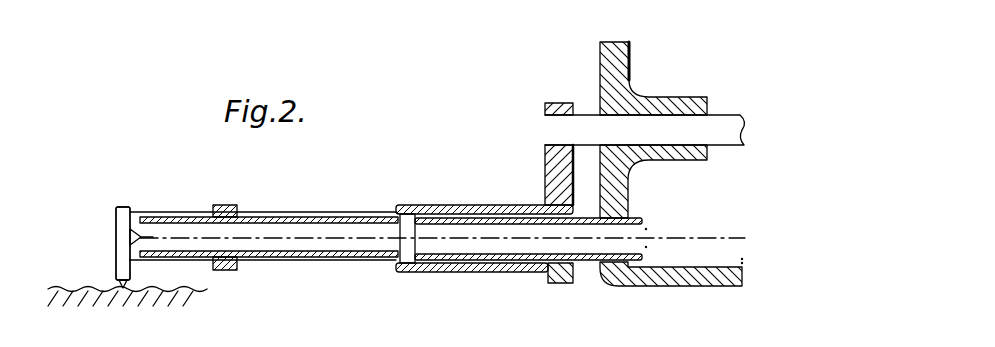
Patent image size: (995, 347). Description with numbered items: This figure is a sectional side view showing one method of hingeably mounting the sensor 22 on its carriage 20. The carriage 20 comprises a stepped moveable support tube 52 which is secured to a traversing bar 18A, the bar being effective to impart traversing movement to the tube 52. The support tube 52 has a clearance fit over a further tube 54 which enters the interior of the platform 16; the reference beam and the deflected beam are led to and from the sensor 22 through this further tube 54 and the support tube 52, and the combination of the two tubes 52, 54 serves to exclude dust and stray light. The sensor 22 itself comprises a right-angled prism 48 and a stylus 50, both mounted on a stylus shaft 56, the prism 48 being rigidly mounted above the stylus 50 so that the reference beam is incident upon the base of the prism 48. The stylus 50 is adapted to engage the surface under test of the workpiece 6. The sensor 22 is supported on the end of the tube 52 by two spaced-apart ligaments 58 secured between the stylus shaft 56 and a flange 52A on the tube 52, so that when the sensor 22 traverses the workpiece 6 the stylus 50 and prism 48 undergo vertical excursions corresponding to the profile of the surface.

The workpiece 6 is at (192, 289).
The platform 16 is at (605, 70).
The shaft 18A is at (560, 131).
The carriage 20 is at (545, 177).
The sensor 22 is at (114, 213).
The right-angled prism 48 is at (129, 234).
The stylus 50 is at (121, 286).
The stepped moveable support tube 52 is at (413, 204).
The flange 52A is at (230, 207).
The further tube 54 is at (585, 268).
The stylus shaft 56 is at (120, 247).
The ligaments 58 is at (172, 211).